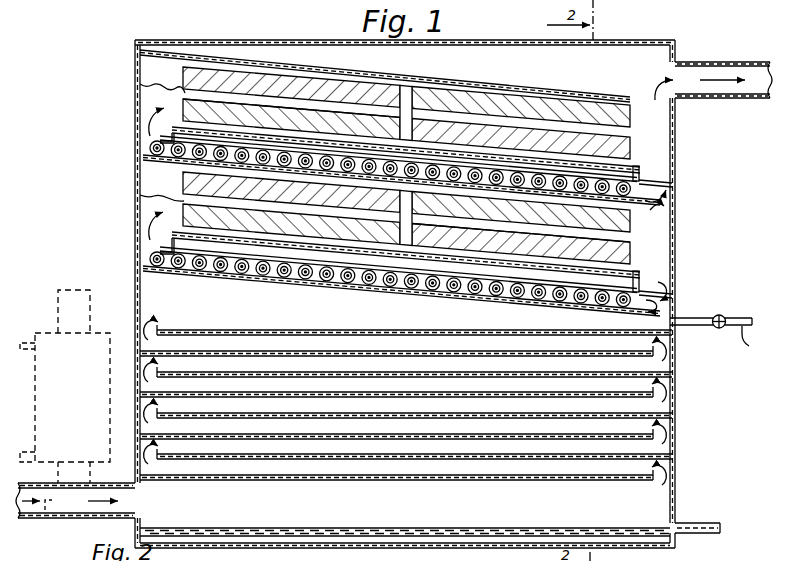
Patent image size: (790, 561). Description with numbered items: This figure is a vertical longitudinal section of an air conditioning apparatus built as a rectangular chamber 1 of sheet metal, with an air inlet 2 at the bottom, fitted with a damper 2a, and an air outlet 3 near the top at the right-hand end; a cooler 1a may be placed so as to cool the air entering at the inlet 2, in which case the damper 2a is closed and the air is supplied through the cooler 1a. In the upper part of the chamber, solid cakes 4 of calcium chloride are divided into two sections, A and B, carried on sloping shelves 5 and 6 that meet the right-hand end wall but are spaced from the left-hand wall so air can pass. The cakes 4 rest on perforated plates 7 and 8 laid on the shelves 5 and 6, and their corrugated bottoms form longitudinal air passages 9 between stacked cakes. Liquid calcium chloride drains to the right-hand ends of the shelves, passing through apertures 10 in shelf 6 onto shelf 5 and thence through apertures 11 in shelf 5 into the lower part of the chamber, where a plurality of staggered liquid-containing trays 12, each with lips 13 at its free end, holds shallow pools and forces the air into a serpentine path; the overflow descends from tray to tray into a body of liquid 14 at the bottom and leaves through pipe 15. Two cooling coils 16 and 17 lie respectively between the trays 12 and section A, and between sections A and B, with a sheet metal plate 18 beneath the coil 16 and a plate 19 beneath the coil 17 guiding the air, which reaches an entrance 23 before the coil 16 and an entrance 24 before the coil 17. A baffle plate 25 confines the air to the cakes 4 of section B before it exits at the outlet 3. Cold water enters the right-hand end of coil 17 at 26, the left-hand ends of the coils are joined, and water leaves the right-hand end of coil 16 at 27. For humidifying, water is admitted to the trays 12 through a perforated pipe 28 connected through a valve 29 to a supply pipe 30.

The rectangular chamber 1 is at (134, 228).
The cooler 1a is at (43, 405).
The air inlet 2 is at (140, 500).
The damper 2a is at (45, 520).
The air outlet 3 is at (737, 63).
The cakes 4 is at (425, 96).
The sloping shelf 5 is at (432, 240).
The sloping shelf 6 is at (470, 172).
The perforated plate 7 is at (492, 262).
The perforated plate 8 is at (540, 152).
The longitudinal air passages 9 is at (328, 133).
The apertures 10 is at (668, 180).
The apertures 11 is at (666, 290).
The liquid-containing trays 12 is at (407, 420).
The lips 13 is at (160, 404).
The body of liquid 14 is at (482, 537).
The pipe 15 is at (712, 535).
The cooling coil 16 is at (148, 259).
The cooling coil 17 is at (134, 150).
The sheet metal plate 18 is at (553, 303).
The plate 19 is at (401, 180).
The entrance 23 is at (668, 318).
The entrance 24 is at (667, 199).
The baffle plate 25 is at (589, 98).
The right-hand end of coil 17 26 is at (645, 183).
The right-hand end of coil 16 27 is at (601, 300).
The perforated pipe 28 is at (634, 315).
The valve 29 is at (727, 319).
The supply pipe 30 is at (756, 341).